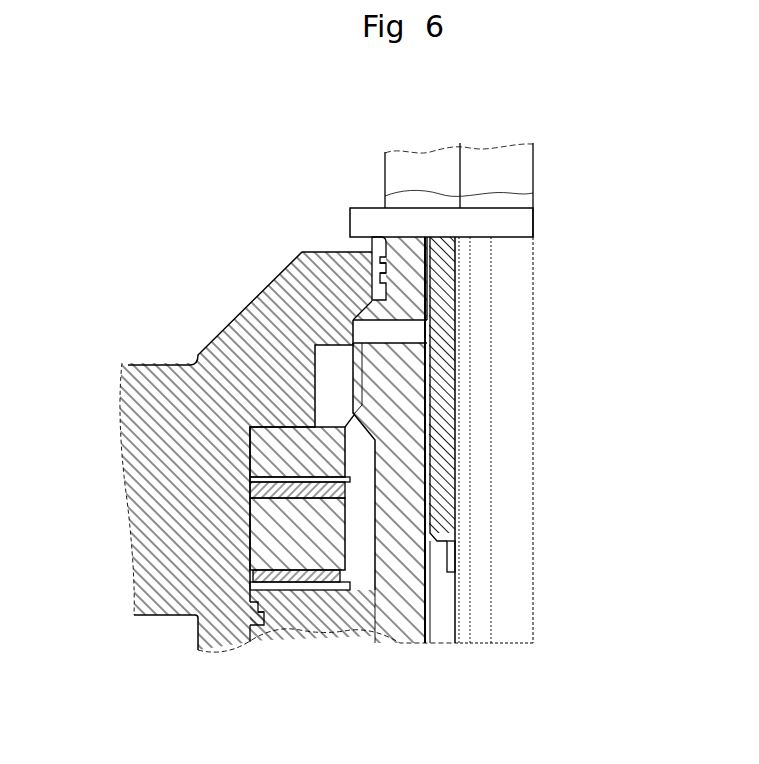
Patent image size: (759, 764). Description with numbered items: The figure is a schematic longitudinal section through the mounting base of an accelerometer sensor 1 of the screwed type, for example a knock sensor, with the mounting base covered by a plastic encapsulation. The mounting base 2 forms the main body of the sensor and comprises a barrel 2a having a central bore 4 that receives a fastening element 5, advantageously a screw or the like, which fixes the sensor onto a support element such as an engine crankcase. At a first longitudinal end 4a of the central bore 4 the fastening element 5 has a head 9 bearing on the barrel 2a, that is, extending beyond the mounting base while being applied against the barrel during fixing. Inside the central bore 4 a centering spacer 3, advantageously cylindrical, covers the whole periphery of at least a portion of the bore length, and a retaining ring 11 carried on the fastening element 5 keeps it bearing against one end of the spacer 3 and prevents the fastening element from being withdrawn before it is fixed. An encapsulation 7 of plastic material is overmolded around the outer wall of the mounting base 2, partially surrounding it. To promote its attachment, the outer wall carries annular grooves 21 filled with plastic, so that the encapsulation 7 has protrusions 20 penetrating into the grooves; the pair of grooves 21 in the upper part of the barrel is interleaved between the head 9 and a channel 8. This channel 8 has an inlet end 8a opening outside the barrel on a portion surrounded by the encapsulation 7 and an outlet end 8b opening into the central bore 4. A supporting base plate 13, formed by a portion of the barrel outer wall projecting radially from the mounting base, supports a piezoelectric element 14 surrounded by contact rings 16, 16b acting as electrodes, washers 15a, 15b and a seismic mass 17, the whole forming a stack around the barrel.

The accelerometer sensor 1 is at (280, 245).
The mounting base 2 is at (343, 618).
The barrel 2a is at (398, 518).
The spacer 3 is at (442, 425).
The central bore 4 is at (447, 602).
The first longitudinal end 4a is at (426, 250).
The fastening element 5 is at (508, 368).
The encapsulation 7 is at (240, 357).
The channel 8 is at (390, 335).
The inlet end 8a is at (357, 333).
The outlet end 8b is at (433, 332).
The head 9 is at (490, 220).
The retaining ring 11 is at (453, 557).
The supporting base plate 13 is at (298, 610).
The piezoelectric element 14 is at (283, 535).
The washer 15a is at (274, 491).
The washer 15b is at (258, 600).
The contact ring 16 is at (270, 481).
The contact ring 16b is at (262, 582).
The seismic mass 17 is at (274, 448).
The protrusion 20 is at (380, 262).
The groove 21 is at (378, 280).